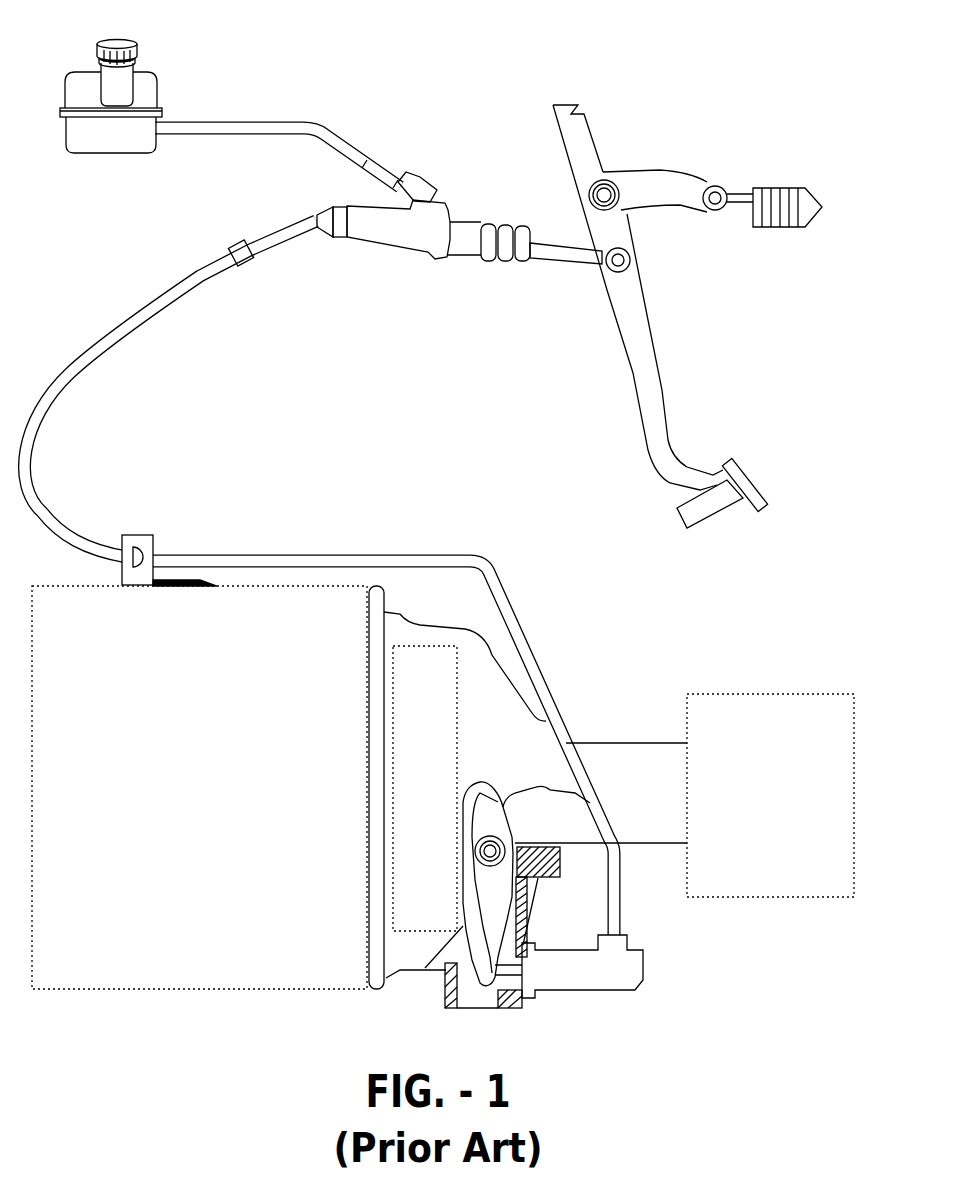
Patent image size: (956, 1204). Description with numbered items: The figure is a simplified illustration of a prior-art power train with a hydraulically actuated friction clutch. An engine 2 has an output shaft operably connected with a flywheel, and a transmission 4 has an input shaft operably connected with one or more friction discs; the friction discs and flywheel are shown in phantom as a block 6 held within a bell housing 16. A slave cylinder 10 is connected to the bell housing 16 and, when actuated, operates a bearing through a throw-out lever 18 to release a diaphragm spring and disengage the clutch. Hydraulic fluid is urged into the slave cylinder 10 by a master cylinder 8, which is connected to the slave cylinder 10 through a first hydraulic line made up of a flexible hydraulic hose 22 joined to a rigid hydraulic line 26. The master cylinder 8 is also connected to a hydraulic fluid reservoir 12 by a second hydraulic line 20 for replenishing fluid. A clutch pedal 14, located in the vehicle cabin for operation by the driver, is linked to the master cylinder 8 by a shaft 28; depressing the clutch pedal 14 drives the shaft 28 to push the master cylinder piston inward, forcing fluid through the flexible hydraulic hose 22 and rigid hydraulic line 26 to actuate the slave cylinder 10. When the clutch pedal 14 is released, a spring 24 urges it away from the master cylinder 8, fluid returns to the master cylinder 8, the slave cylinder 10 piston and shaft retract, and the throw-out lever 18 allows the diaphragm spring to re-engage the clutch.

The engine 2 is at (208, 787).
The transmission 4 is at (767, 804).
The friction discs and flywheel 6 is at (419, 797).
The master cylinder 8 is at (392, 236).
The slave cylinder 10 is at (667, 960).
The hydraulic fluid reservoir 12 is at (168, 82).
The clutch pedal 14 is at (640, 377).
The bell housing 16 is at (495, 710).
The throw-out lever 18 is at (495, 893).
The second hydraulic line 20 is at (290, 130).
The flexible hydraulic hose 22 is at (107, 337).
The spring 24 is at (760, 168).
The rigid hydraulic line 26 is at (343, 553).
The shaft 28 is at (556, 262).